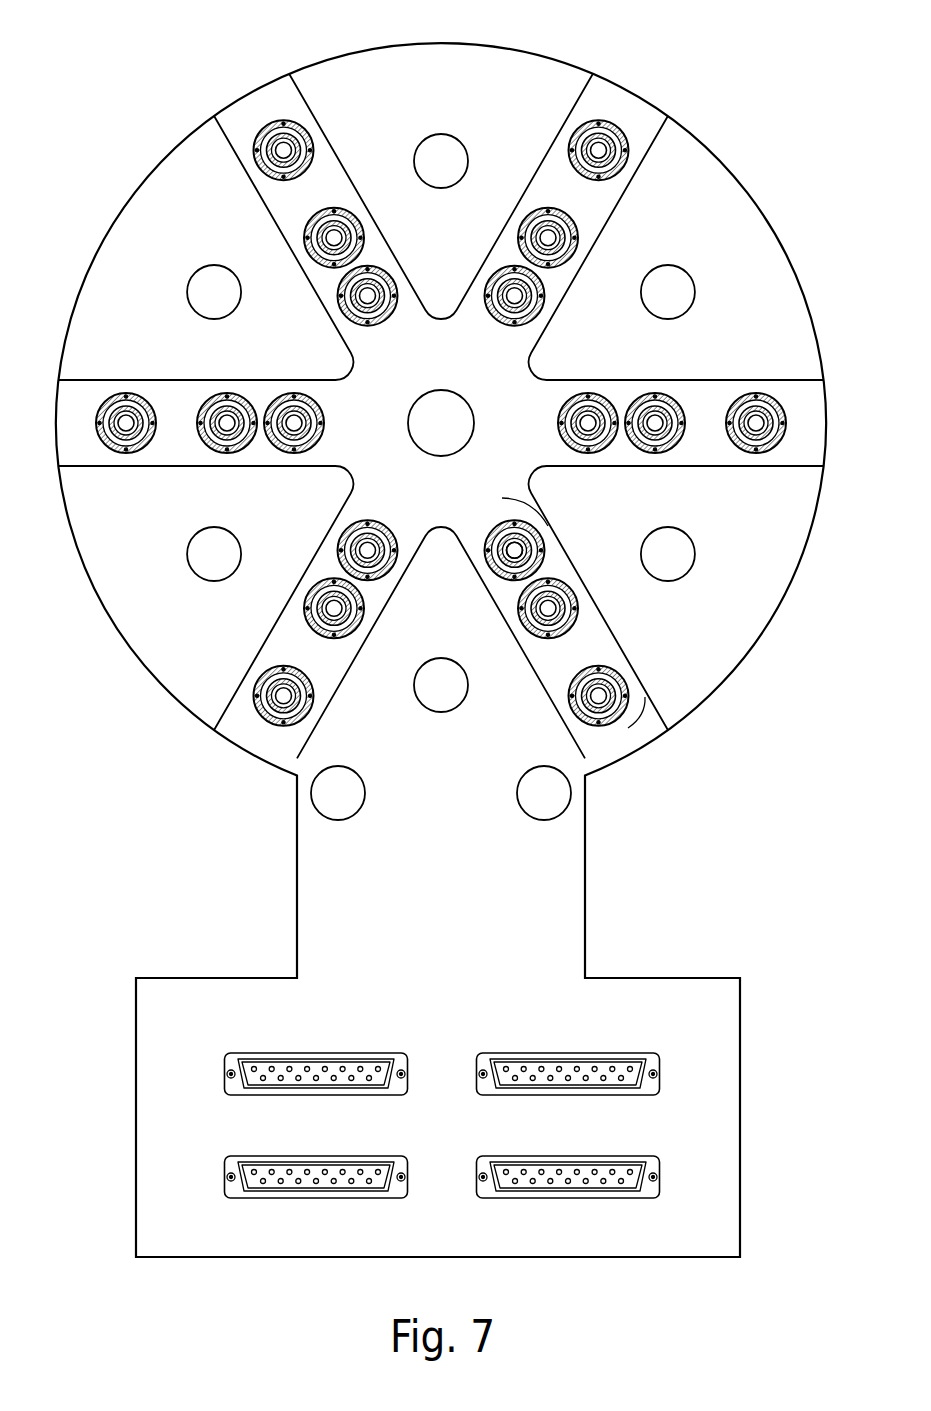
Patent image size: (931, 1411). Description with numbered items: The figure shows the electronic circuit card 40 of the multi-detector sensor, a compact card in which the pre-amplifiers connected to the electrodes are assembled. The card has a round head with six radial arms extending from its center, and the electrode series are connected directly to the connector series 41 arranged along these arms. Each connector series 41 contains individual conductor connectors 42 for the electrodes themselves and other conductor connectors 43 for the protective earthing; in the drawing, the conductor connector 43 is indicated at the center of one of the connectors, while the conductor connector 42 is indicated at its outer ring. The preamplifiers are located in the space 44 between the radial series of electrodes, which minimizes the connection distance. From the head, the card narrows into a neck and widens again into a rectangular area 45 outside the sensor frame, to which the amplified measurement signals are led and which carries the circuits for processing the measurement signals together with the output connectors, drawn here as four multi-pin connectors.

The circuit card 40 is at (197, 820).
The connector series 41 is at (586, 586).
The conductor connector 42 is at (503, 575).
The conductor connector for protective earthing 43 is at (509, 550).
The space 44 is at (634, 333).
The area outside the sensor frame 45 is at (595, 1070).